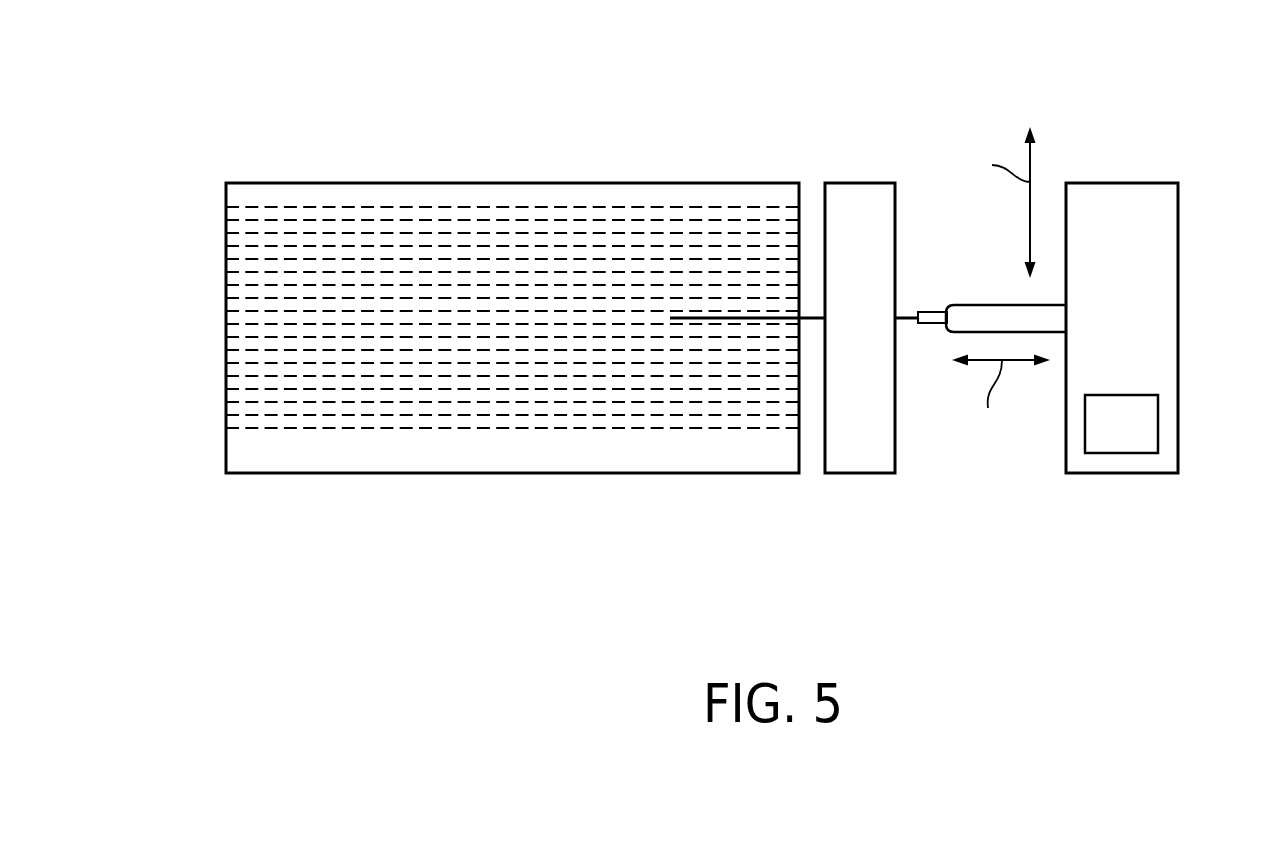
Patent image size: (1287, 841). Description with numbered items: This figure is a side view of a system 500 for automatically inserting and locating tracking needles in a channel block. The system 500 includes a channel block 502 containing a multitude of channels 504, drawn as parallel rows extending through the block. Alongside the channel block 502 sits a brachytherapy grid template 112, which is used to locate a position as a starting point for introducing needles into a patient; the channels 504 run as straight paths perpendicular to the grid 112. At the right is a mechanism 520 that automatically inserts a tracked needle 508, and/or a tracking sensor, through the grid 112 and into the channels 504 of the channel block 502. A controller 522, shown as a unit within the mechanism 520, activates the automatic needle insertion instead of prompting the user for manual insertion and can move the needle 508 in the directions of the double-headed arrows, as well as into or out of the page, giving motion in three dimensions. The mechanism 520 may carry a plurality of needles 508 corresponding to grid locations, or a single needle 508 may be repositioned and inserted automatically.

The system 500 is at (590, 47).
The channel block 502 is at (272, 183).
The channels 504 is at (232, 265).
The grid template 112 is at (857, 475).
The tracked needle 508 is at (973, 305).
The mechanism 520 is at (1196, 318).
The controller 522 is at (1117, 453).